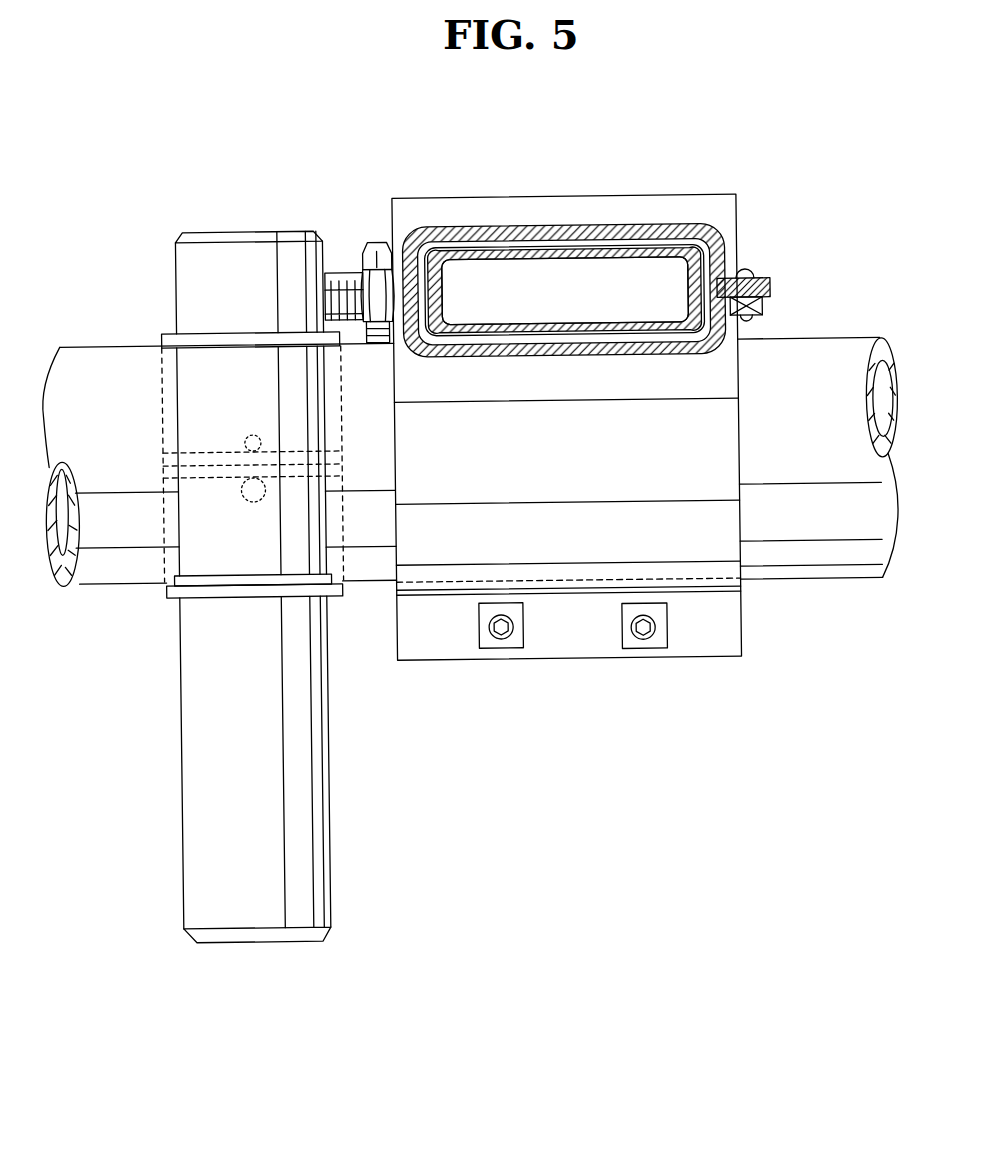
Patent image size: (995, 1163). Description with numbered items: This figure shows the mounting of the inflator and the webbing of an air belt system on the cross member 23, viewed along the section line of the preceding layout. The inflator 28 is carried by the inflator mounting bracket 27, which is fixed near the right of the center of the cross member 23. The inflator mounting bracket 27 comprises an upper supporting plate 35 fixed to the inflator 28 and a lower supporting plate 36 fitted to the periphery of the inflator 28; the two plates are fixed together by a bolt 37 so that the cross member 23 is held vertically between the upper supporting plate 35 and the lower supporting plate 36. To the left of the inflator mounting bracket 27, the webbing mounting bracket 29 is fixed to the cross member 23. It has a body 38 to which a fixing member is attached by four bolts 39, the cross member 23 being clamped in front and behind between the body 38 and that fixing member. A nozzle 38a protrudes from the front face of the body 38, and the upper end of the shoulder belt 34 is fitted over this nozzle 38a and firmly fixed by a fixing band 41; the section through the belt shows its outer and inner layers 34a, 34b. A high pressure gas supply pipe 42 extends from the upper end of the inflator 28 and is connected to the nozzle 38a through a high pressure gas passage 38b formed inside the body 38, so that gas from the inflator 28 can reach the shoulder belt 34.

The cross member 23 is at (809, 561).
The inflator mounting bracket 27 is at (226, 331).
The inflator 28 is at (203, 776).
The webbing mounting bracket 29 is at (706, 184).
The shoulder belt 34 is at (564, 246).
The outer ring 34a is at (636, 228).
The inner ring 34b is at (491, 227).
The upper supporting plate 35 is at (164, 330).
The lower supporting plate 36 is at (170, 586).
The bolt 37 is at (245, 427).
The body of the bracket 38 is at (743, 385).
The nozzle 38a is at (532, 259).
The high pressure gas passage 38b is at (372, 241).
The bolts 39 is at (498, 637).
The fixing band 41 is at (539, 356).
The high pressure gas supply pipe 42 is at (344, 313).